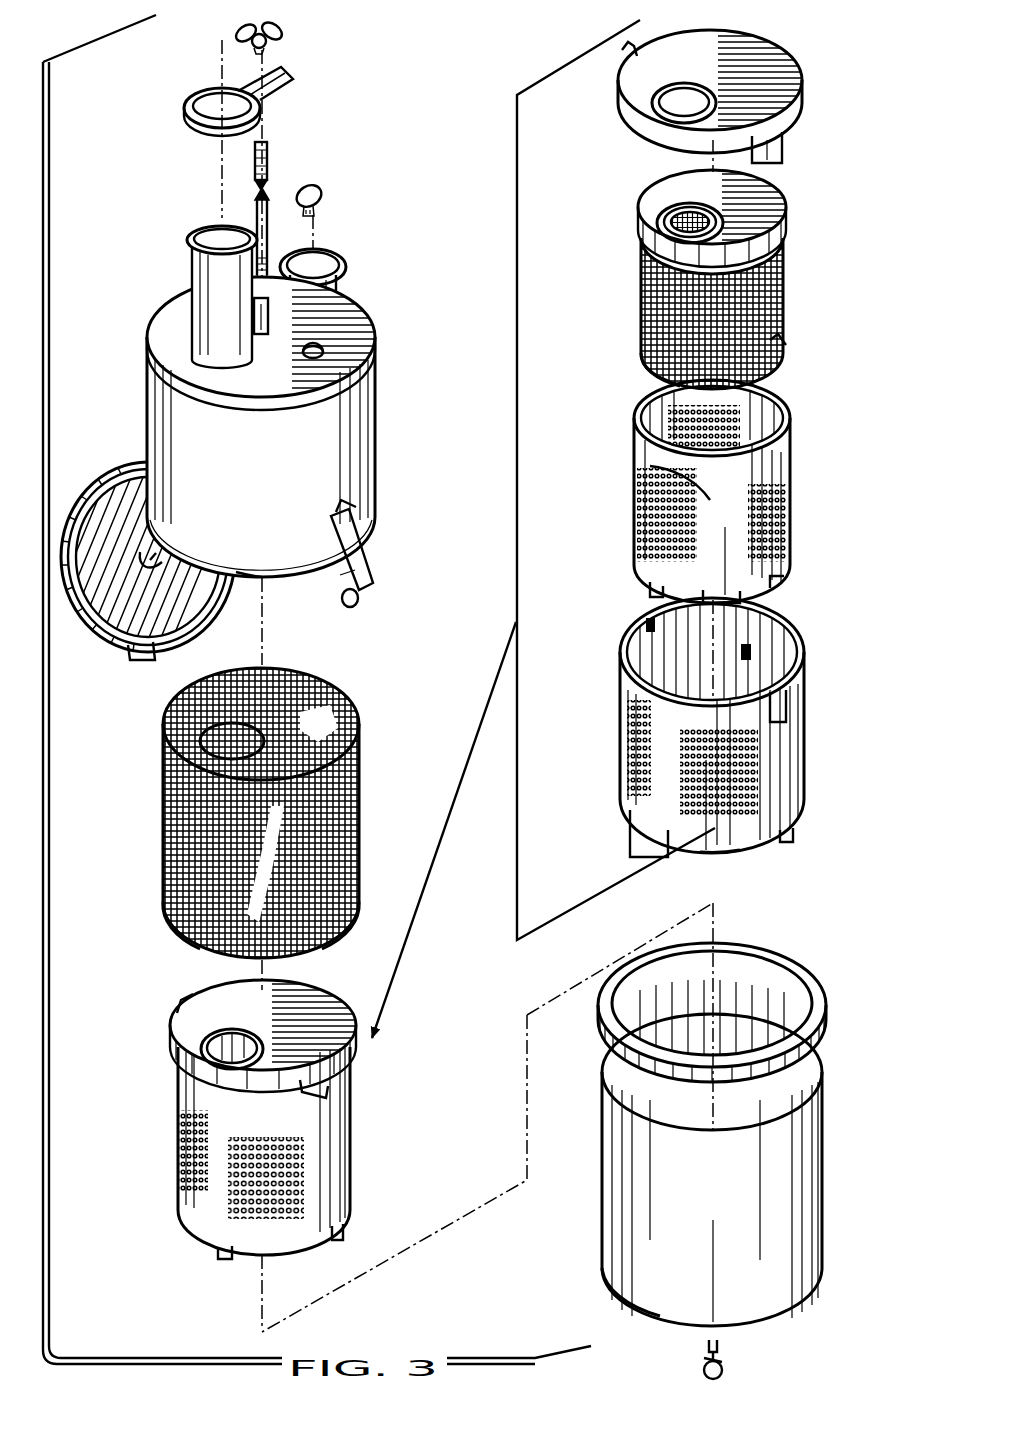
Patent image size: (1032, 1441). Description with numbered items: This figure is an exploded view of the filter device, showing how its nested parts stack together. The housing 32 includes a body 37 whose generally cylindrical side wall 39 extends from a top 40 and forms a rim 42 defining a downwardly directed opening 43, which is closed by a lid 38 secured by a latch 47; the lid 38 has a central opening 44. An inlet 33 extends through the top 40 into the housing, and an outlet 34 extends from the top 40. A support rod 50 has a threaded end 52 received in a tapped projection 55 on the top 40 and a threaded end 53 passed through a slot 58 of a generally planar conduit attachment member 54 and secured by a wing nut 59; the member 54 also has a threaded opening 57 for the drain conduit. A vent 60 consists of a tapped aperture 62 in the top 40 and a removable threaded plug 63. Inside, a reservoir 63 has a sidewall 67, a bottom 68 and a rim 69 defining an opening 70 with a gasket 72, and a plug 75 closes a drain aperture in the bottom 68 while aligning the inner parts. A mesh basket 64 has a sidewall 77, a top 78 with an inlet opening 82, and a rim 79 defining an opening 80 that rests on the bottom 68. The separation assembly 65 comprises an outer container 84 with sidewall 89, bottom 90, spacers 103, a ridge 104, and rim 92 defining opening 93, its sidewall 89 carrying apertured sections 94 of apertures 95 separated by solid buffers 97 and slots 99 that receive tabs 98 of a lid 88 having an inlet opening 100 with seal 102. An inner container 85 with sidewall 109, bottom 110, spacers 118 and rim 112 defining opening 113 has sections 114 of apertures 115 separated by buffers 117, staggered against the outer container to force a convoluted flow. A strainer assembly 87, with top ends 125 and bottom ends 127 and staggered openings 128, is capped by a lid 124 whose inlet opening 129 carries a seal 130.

The housing 32 is at (382, 396).
The inlet 33 is at (196, 288).
The outlet 34 is at (345, 262).
The body 37 is at (375, 432).
The lid 38 is at (96, 522).
The side wall 39 is at (375, 488).
The top 40 is at (358, 287).
The rim 42 is at (294, 578).
The opening 43 is at (252, 580).
The opening 44 is at (152, 566).
The latch 47 is at (374, 550).
The rod 50 is at (268, 210).
The end 52 is at (308, 250).
The end 53 is at (268, 150).
The conduit attachment member 54 is at (215, 82).
The projection 55 is at (270, 330).
The opening 57 is at (188, 118).
The slot 58 is at (287, 75).
The wing nut 59 is at (285, 40).
The vent 60 is at (332, 338).
The aperture 62 is at (325, 353).
The reservoir 63 is at (322, 195).
The basket 64 is at (366, 794).
The separation assembly 65 is at (364, 1146).
The sidewall 67 is at (622, 1260).
The bottom 68 is at (638, 1305).
The rim 69 is at (810, 973).
The opening 70 is at (744, 982).
The gasket 72 is at (825, 1043).
The plug 75 is at (730, 1362).
The sidewall 77 is at (362, 860).
The top 78 is at (334, 690).
The rim 79 is at (190, 935).
The opening 80 is at (322, 950).
The inlet opening 82 is at (200, 737).
The outer container 84 is at (175, 1108).
The inner container 85 is at (802, 503).
The strainer assembly 87 is at (782, 287).
The lid 88 is at (795, 78).
The sidewall 89 is at (802, 783).
The bottom 90 is at (741, 847).
The rim 92 is at (805, 640).
The opening 93 is at (740, 647).
The sections 94 is at (688, 770).
The apertures 95 is at (680, 808).
The buffers 97 is at (663, 737).
The tabs 98 is at (786, 146).
The slots 99 is at (648, 622).
The inlet opening 100 is at (655, 110).
The seal 102 is at (655, 87).
The spacers 103 is at (331, 1238).
The ridge 104 is at (804, 678).
The sidewall 109 is at (790, 457).
The bottom 110 is at (665, 590).
The rim 112 is at (792, 407).
The opening 113 is at (755, 422).
The sections 114 is at (660, 505).
The apertures 115 is at (652, 537).
The buffers 117 is at (634, 467).
The spacers 118 is at (775, 587).
The lid 124 is at (775, 210).
The top end 125 is at (642, 268).
The bottom end 127 is at (642, 368).
The openings 128 is at (775, 343).
The inlet opening 129 is at (658, 218).
The seal 130 is at (672, 205).